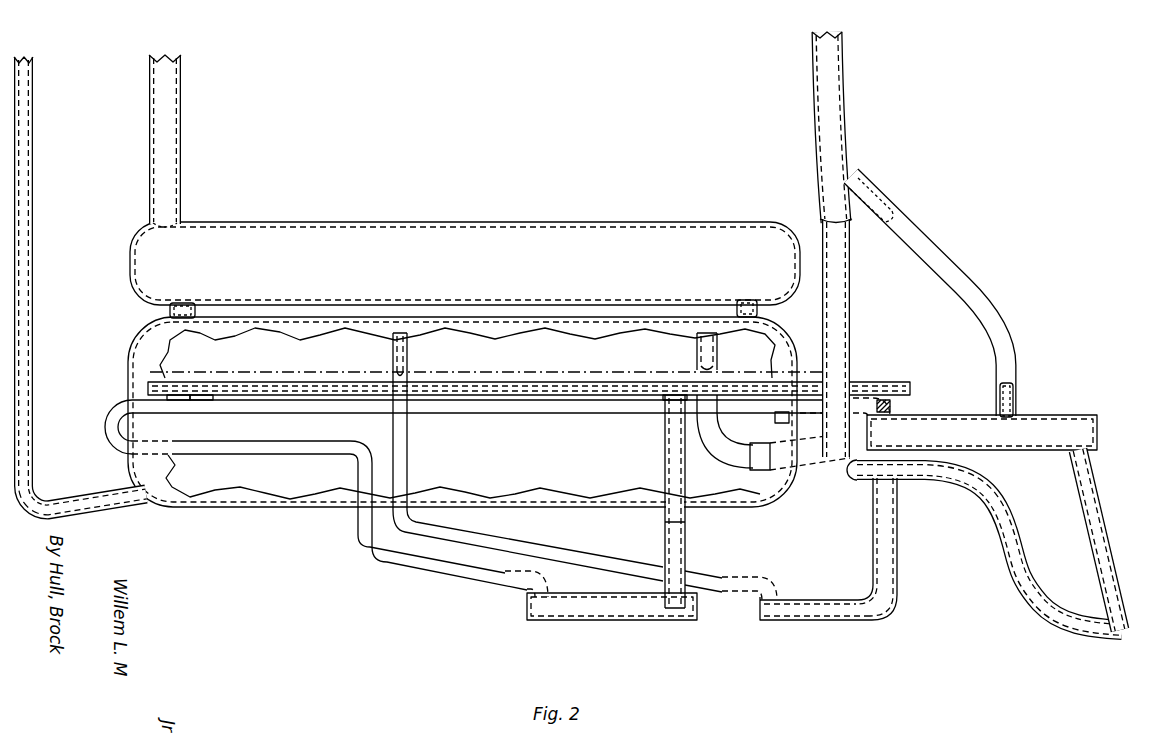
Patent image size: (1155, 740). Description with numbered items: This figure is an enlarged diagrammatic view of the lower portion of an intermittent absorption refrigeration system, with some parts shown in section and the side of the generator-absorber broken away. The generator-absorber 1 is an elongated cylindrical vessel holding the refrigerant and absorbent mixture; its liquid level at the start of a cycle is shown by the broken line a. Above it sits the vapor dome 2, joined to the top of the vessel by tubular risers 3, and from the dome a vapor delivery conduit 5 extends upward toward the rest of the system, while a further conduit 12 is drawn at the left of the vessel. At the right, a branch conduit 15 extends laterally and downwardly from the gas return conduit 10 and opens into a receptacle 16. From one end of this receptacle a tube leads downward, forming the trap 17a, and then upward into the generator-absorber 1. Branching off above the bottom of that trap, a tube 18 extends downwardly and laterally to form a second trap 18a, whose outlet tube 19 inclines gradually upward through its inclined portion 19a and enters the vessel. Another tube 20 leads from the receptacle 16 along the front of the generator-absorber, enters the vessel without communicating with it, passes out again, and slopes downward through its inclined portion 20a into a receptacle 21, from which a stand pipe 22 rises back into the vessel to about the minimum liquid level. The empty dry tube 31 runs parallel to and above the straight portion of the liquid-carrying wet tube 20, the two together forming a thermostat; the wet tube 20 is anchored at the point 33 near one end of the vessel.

The generator-absorber 1 is at (271, 499).
The vapor dome 2 is at (465, 263).
The tubular risers 3 is at (183, 304).
The vapor delivery conduit 5 is at (163, 116).
The gas return conduit 10 is at (837, 105).
The pipe 12 is at (25, 287).
The branch conduit 15 is at (958, 271).
The receptacle 16 is at (1043, 414).
The trap 17a is at (1098, 640).
The tube 18 is at (896, 527).
The trap 18a is at (840, 621).
The tube 19 is at (407, 353).
The inclined portion of tube 19 19a is at (563, 545).
The tube (wet tube) 20 is at (540, 406).
The inclined portion of tube 20 20a is at (443, 570).
The receptacle 21 is at (632, 621).
The stand pipe 22 is at (687, 543).
The tube (dry tube) 31 is at (597, 381).
The anchoring point 33 is at (774, 416).
The liquid level line a is at (507, 370).